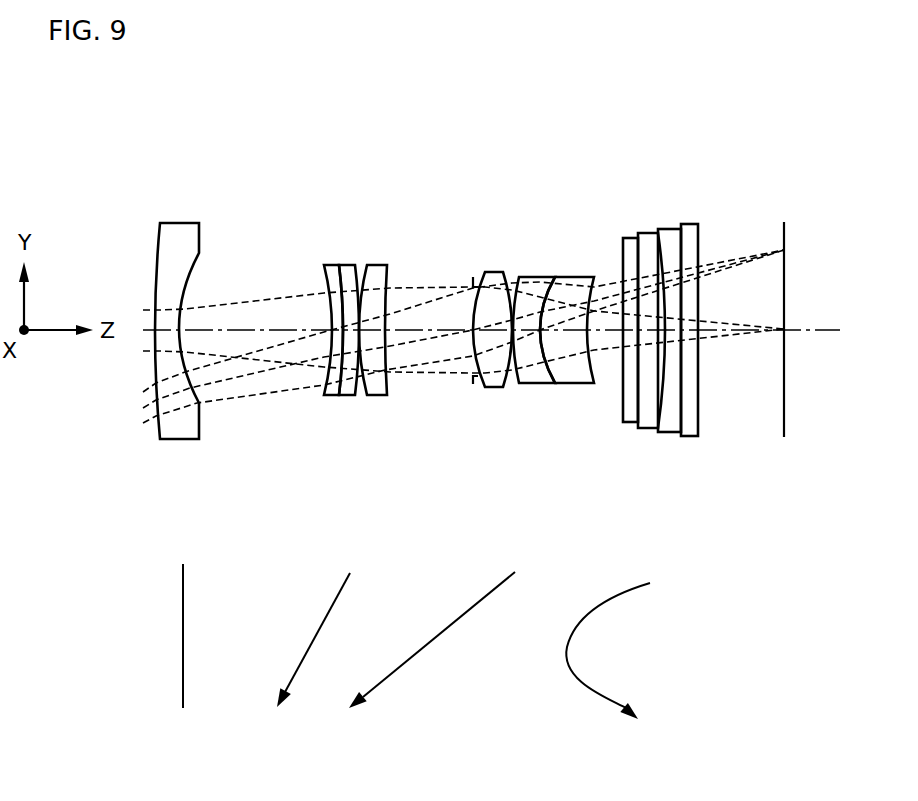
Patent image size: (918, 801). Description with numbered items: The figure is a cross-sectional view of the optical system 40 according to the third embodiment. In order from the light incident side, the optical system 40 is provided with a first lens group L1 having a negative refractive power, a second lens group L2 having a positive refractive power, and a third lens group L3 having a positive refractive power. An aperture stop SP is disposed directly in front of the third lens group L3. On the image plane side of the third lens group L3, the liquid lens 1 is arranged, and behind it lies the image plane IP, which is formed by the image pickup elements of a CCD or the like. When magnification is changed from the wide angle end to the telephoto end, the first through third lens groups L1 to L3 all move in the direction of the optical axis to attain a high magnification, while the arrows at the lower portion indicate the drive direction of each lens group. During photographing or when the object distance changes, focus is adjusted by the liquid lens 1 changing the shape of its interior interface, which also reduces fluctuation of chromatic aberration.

The optical system 40 is at (637, 150).
The first lens group L1 is at (228, 472).
The second lens group L2 is at (400, 412).
The third lens group L3 is at (598, 412).
The aperture stop SP is at (473, 285).
The liquid lens 1 is at (712, 448).
The image plane IP is at (783, 420).